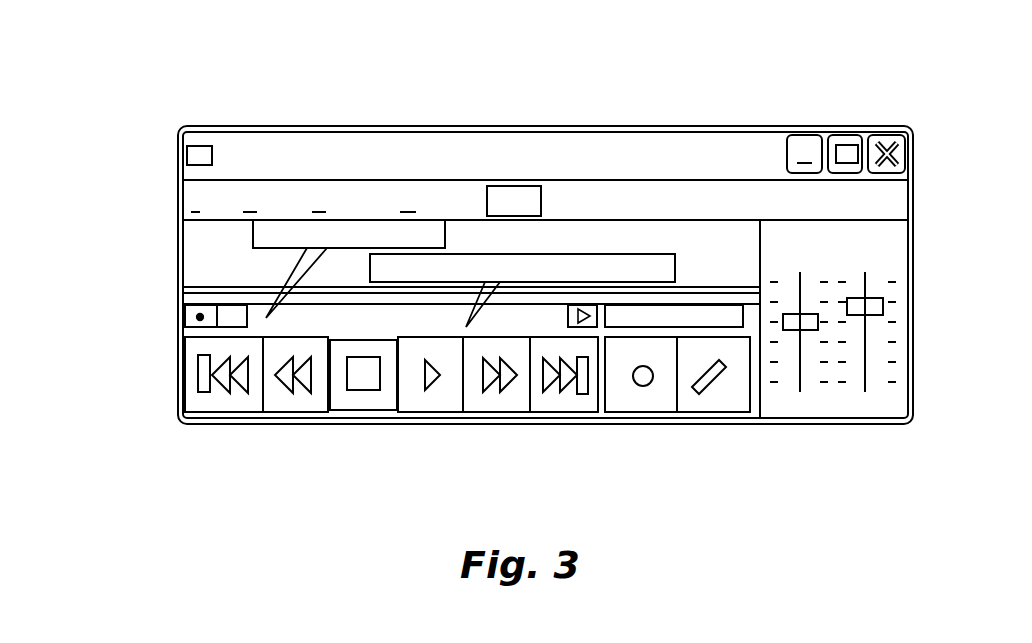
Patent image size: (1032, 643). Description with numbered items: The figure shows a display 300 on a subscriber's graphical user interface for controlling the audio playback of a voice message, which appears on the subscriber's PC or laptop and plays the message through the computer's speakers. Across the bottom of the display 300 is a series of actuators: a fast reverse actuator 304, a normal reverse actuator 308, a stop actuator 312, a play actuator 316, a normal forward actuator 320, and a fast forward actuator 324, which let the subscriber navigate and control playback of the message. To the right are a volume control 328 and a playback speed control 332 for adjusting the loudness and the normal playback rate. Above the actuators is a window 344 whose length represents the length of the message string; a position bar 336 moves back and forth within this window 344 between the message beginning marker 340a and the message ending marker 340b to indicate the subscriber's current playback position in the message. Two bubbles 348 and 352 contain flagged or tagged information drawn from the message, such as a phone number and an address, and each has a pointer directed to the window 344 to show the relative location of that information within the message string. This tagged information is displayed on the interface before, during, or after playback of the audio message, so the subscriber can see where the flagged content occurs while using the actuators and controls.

The display 300 is at (556, 126).
The fast reverse actuator 304 is at (218, 412).
The normal reverse actuator 308 is at (292, 412).
The stop actuator 312 is at (372, 412).
The play actuator 316 is at (432, 412).
The normal forward actuator 320 is at (500, 412).
The fast forward actuator 324 is at (573, 412).
The volume control 328 is at (800, 392).
The playback speed control 332 is at (865, 392).
The position bar 336 is at (232, 318).
The message beginning marker 340a is at (185, 322).
The message ending marker 340b is at (590, 316).
The window 344 is at (422, 325).
The bubble 348 is at (285, 222).
The bubble 352 is at (568, 252).